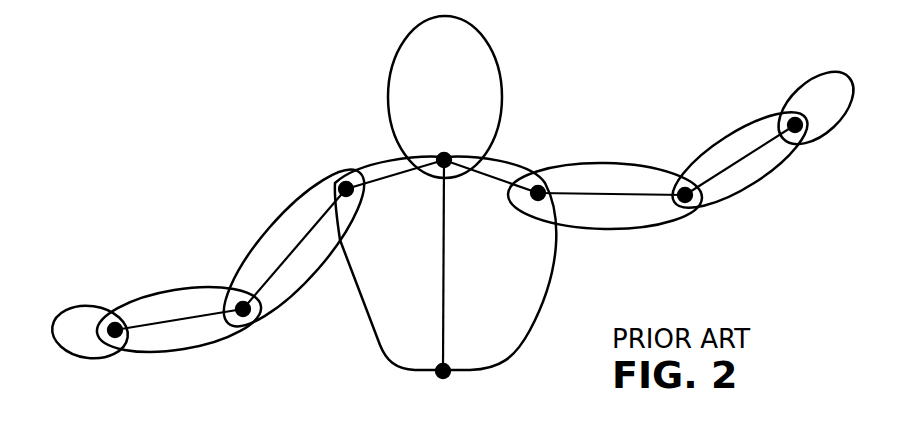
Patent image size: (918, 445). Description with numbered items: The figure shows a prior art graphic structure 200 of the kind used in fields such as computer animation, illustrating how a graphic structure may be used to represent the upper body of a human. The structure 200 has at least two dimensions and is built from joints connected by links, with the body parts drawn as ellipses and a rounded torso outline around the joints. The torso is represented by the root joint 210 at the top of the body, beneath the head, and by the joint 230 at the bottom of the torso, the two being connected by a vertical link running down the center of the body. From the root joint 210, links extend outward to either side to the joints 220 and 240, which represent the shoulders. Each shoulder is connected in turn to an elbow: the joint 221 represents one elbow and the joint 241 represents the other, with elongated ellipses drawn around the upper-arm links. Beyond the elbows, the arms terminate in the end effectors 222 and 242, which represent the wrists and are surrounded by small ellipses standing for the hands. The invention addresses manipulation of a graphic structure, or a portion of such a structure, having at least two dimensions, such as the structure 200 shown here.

The structure 200 is at (212, 161).
The root joint 210 is at (443, 142).
The joint 220 is at (319, 167).
The joint 221 is at (270, 332).
The end effector 222 is at (130, 359).
The joint 230 is at (443, 389).
The joint 240 is at (537, 166).
The joint 241 is at (715, 217).
The end effector 242 is at (827, 147).